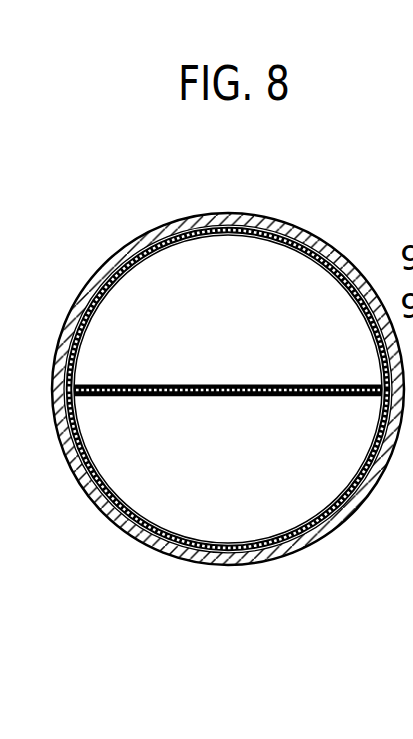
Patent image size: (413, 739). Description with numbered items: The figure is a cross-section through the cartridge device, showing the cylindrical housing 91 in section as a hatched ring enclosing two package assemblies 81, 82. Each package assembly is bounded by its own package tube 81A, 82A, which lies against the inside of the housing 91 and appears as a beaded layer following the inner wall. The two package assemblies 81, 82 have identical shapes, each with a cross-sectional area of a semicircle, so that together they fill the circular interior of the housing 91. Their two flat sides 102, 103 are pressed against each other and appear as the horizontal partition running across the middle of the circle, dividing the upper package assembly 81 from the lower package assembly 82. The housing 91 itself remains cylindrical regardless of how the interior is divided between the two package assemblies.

The cylindrical housing 91 is at (137, 242).
The package tube 81A is at (308, 248).
The package tube 82A is at (300, 543).
The package assembly 81 is at (309, 342).
The package assembly 82 is at (310, 467).
The flat side 102 is at (192, 384).
The flat side 103 is at (145, 397).